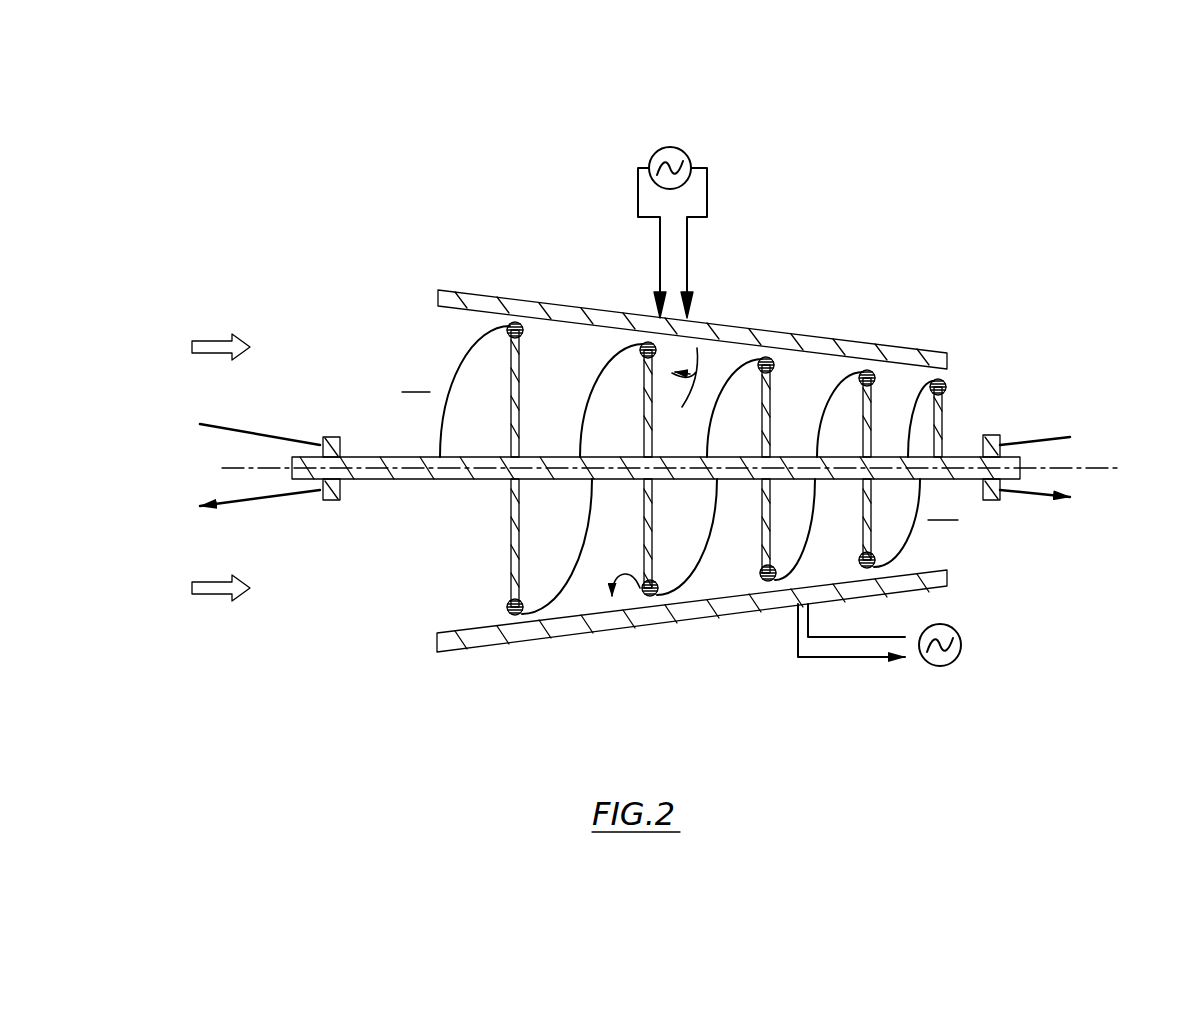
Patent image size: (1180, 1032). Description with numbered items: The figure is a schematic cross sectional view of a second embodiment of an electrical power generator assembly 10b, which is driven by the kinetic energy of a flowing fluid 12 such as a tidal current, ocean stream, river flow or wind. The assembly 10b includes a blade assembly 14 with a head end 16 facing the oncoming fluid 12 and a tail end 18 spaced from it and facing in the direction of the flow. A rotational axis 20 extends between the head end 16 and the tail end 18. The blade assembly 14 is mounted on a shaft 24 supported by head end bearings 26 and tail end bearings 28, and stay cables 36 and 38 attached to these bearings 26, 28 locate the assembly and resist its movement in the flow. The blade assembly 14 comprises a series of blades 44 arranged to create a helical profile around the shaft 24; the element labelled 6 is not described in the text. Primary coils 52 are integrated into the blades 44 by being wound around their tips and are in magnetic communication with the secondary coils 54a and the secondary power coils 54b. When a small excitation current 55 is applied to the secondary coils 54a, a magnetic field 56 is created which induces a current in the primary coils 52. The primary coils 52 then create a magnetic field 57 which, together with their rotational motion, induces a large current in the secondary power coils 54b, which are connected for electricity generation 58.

The electrical power generator assembly 10b is at (546, 194).
The small excitation current 55 is at (707, 175).
The blade assembly 14 is at (538, 296).
The primary coils 52 is at (506, 328).
The secondary coils 54a is at (788, 335).
The flowing fluid 12 is at (205, 340).
The stay cables 36 is at (252, 432).
The head end bearings 26 is at (335, 437).
The head end 16 is at (418, 376).
The blades 44 is at (580, 440).
The magnetic field 56 is at (679, 397).
The shaft 24 is at (782, 453).
The tail end bearings 28 is at (990, 433).
The stay cables 38 is at (1030, 430).
The rotational axis 20 is at (1093, 467).
The tail end 18 is at (944, 504).
The rotor 6 is at (318, 497).
The magnetic field 57 is at (625, 598).
The secondary power coils 54b is at (780, 598).
The electricity generation 58 is at (948, 670).